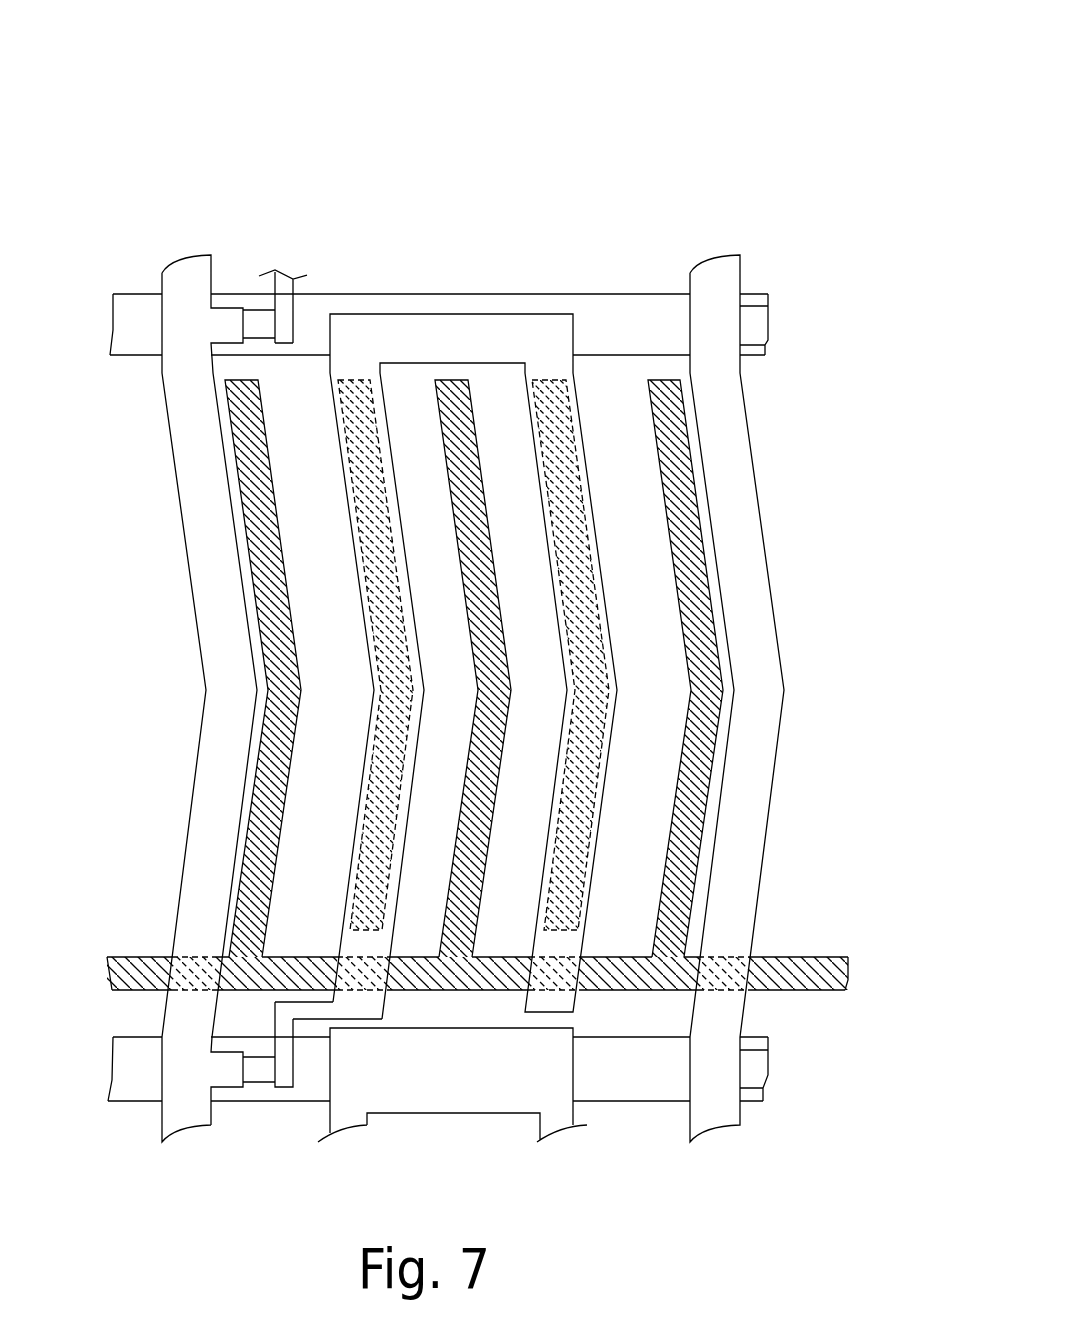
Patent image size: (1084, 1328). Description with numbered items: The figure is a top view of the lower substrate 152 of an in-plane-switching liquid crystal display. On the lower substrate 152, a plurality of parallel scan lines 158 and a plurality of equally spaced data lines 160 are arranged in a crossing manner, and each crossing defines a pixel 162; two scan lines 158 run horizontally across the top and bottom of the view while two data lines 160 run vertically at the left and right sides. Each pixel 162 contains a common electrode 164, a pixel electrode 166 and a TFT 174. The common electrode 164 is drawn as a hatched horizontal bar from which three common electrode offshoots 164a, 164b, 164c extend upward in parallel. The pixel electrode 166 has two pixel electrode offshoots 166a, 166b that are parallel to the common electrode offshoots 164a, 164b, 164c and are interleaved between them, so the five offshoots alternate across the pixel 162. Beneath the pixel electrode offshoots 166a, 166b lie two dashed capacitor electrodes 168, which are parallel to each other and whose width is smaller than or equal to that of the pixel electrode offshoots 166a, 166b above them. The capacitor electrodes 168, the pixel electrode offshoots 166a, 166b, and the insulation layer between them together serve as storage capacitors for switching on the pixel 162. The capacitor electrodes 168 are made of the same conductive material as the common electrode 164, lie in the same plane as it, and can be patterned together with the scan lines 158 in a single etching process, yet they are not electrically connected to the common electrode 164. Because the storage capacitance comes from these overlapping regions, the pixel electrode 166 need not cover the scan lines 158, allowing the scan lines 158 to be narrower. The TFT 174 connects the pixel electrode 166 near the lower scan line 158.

The lower substrate 152 is at (501, 613).
The scan line 158 is at (640, 313).
The data line 160 is at (200, 457).
The pixel 162 is at (318, 466).
The common electrode 164 is at (815, 975).
The common electrode offshoot 164a is at (252, 492).
The common electrode offshoot 164b is at (490, 664).
The common electrode offshoot 164c is at (683, 495).
The pixel electrode 166 is at (441, 340).
The pixel electrode offshoot 166a is at (358, 562).
The pixel electrode offshoot 166b is at (606, 560).
The capacitor electrode 168 is at (385, 623).
The TFT 174 is at (268, 1120).